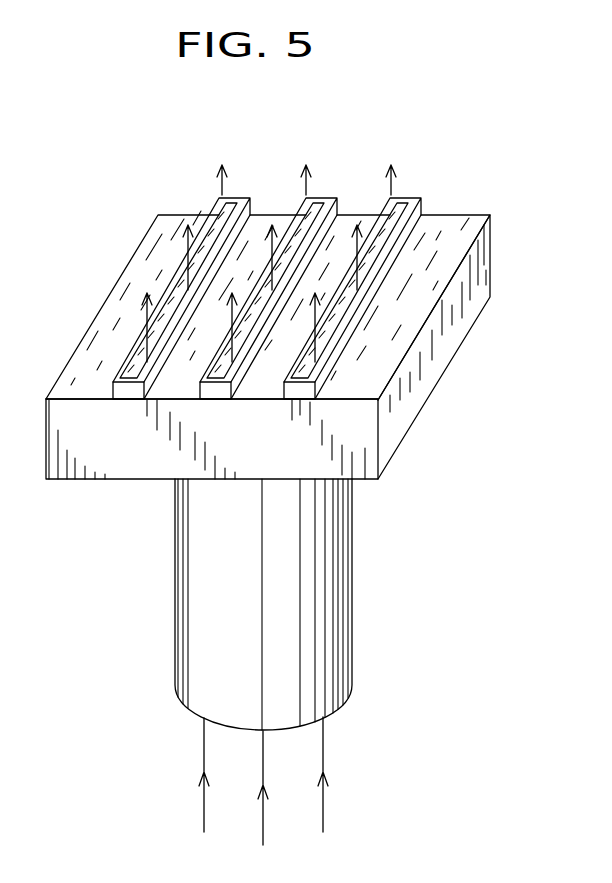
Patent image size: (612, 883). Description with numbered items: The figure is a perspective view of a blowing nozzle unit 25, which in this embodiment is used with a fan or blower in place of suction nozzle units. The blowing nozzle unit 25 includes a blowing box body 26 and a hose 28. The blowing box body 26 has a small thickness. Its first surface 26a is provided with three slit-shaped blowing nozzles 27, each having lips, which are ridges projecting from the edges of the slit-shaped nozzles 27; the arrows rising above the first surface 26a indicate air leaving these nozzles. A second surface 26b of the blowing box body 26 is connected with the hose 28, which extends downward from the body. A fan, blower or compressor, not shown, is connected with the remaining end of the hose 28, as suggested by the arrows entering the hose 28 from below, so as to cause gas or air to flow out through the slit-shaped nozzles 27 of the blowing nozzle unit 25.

The blowing nozzle unit 25 is at (280, 477).
The blowing box body 26 is at (270, 332).
The first surface 26a is at (460, 225).
The second surface 26b is at (98, 481).
The slit-shaped blowing nozzle 27 is at (325, 196).
The hose 28 is at (341, 618).